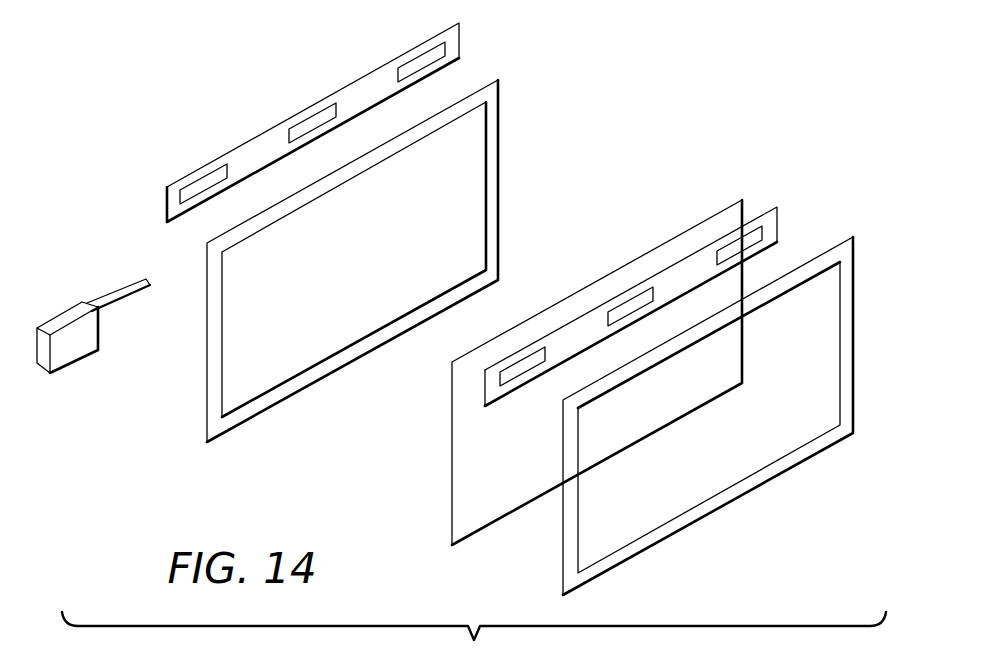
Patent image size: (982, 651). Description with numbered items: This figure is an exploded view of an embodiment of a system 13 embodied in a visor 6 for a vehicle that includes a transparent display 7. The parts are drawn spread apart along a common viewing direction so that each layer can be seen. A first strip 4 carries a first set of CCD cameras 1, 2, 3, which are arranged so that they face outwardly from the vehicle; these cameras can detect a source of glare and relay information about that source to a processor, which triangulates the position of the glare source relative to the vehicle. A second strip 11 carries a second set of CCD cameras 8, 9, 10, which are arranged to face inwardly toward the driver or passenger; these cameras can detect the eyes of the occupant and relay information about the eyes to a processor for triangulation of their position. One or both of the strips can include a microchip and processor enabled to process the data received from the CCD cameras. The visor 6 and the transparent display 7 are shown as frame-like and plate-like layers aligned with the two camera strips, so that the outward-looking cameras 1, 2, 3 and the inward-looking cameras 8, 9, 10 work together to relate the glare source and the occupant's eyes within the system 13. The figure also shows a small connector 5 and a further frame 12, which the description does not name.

The CCD camera 1 is at (202, 183).
The CCD camera 2 is at (312, 120).
The CCD camera 3 is at (422, 58).
The first strip 4 is at (167, 210).
The connector 5 is at (68, 310).
The visor 6 is at (498, 125).
The transparent display 7 is at (450, 463).
The CCD camera 8 is at (520, 363).
The CCD camera 9 is at (630, 305).
The CCD camera 10 is at (740, 242).
The second strip 11 is at (777, 230).
The second frame 12 is at (853, 295).
The system 13 is at (735, 128).